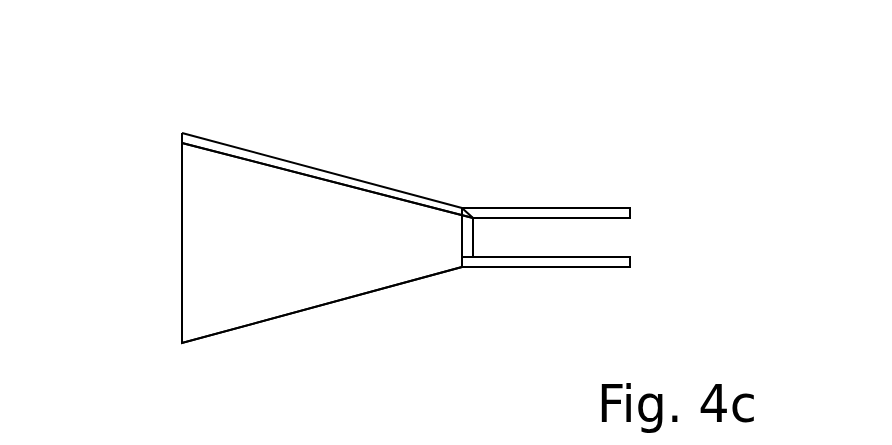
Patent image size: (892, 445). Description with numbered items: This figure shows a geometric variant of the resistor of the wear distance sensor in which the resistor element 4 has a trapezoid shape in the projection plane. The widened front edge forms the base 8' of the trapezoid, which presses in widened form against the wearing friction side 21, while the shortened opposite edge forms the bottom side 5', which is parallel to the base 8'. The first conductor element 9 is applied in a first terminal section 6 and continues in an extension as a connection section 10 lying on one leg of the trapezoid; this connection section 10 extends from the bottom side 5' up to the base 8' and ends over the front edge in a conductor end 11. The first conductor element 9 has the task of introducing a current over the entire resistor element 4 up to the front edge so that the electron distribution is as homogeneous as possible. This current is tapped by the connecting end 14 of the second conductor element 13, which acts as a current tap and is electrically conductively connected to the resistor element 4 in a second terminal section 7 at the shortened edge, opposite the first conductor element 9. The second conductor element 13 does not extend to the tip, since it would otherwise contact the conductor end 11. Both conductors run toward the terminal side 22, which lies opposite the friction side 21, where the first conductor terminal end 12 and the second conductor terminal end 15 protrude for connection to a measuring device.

The resistor element 4 is at (294, 190).
The bottom side 5' is at (484, 205).
The first terminal section 6 is at (323, 188).
The second terminal section 7 is at (463, 250).
The base 8' is at (151, 238).
The first conductor element 9 is at (549, 212).
The connection section 10 is at (393, 196).
The conductor end 11 is at (182, 133).
The first conductor terminal end 12 is at (632, 210).
The second conductor element 13 is at (556, 262).
The connecting end 14 is at (468, 267).
The second conductor terminal end 15 is at (632, 266).
The friction side 21 is at (153, 281).
The terminal side 22 is at (652, 247).